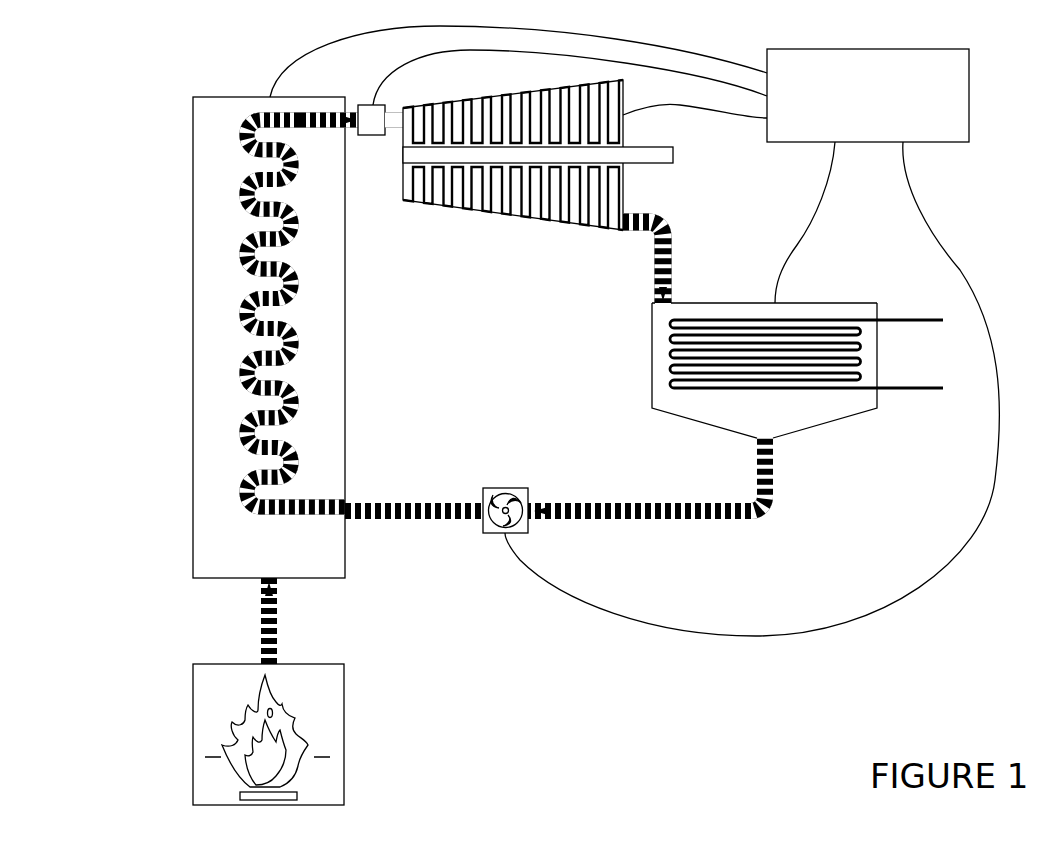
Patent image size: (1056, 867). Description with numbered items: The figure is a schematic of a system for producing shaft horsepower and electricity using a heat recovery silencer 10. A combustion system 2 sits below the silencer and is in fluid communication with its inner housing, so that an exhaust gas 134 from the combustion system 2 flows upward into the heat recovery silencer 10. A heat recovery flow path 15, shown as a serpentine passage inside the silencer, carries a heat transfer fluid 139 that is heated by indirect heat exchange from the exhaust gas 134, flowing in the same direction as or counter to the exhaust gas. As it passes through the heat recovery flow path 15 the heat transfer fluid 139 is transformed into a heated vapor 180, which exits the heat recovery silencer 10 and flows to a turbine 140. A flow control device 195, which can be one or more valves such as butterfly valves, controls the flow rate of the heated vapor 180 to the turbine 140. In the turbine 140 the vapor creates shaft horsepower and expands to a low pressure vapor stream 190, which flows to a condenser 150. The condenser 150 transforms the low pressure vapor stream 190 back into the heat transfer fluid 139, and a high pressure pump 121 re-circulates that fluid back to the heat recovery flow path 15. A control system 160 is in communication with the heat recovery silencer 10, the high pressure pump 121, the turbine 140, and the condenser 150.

The combustion system 2 is at (193, 737).
The heat recovery silencer 10 is at (193, 340).
The heat recovery flow path 15 is at (298, 347).
The high pressure pump 121 is at (505, 488).
The exhaust gas 134 is at (277, 626).
The heat transfer fluid 139 is at (375, 502).
The turbine 140 is at (505, 214).
The condenser 150 is at (652, 356).
The control system 160 is at (970, 98).
The heated vapor 180 is at (315, 127).
The low pressure vapor stream 190 is at (672, 252).
The flow control device 195 is at (376, 135).